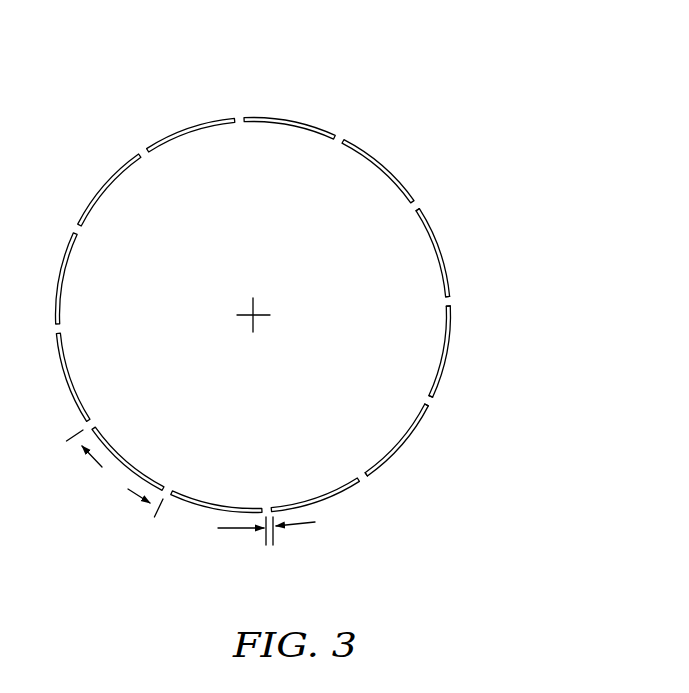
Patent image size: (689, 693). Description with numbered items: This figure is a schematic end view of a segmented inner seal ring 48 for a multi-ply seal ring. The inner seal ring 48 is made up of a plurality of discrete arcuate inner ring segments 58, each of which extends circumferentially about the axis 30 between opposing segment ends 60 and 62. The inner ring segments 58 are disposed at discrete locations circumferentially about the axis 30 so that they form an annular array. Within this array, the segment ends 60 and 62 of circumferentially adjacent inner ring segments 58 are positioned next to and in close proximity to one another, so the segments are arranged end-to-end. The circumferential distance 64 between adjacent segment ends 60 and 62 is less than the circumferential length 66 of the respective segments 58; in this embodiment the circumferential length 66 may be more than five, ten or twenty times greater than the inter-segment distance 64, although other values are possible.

The inner seal ring 48 is at (289, 309).
The axis 30 is at (257, 311).
The inner ring segments 58 is at (449, 262).
The segment end 60 is at (419, 201).
The segment end 62 is at (449, 302).
The circumferential distance 64 is at (242, 529).
The circumferential length 66 is at (115, 473).